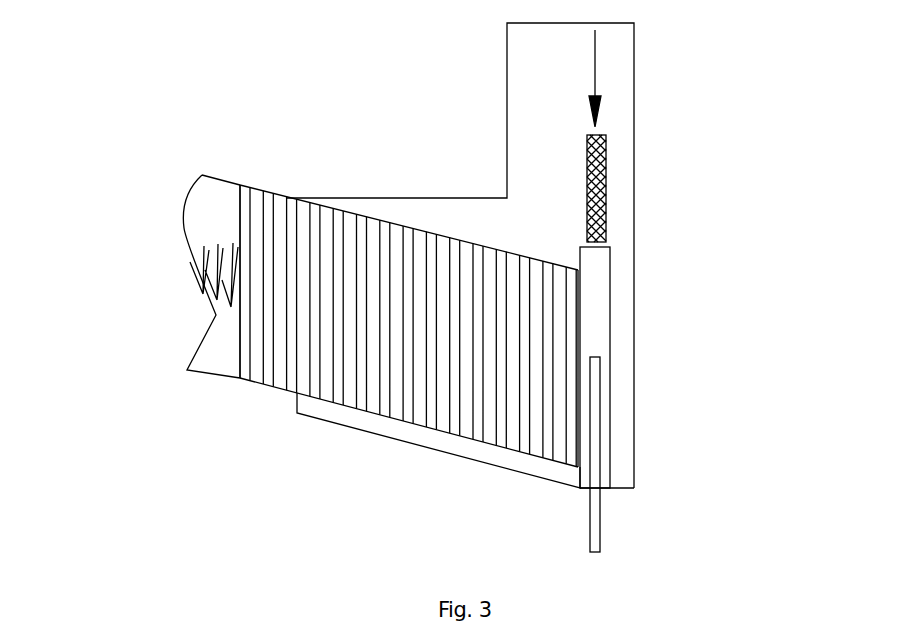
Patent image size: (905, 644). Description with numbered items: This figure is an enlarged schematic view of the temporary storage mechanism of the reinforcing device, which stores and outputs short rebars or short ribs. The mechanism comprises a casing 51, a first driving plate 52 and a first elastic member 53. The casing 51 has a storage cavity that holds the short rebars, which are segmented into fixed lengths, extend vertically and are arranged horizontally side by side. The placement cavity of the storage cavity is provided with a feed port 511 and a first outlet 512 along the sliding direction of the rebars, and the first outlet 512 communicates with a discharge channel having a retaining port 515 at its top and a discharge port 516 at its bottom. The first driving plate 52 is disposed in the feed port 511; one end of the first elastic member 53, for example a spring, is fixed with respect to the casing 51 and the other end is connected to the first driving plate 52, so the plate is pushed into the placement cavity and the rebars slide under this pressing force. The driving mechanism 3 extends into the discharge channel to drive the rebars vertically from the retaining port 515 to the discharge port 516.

The driving mechanism 3 is at (602, 177).
The casing 51 is at (380, 427).
The feed port 511 is at (193, 235).
The first outlet 512 is at (580, 355).
The retaining port 515 is at (598, 260).
The discharge port 516 is at (607, 488).
The first driving plate 52 is at (248, 243).
The first elastic member 53 is at (216, 315).